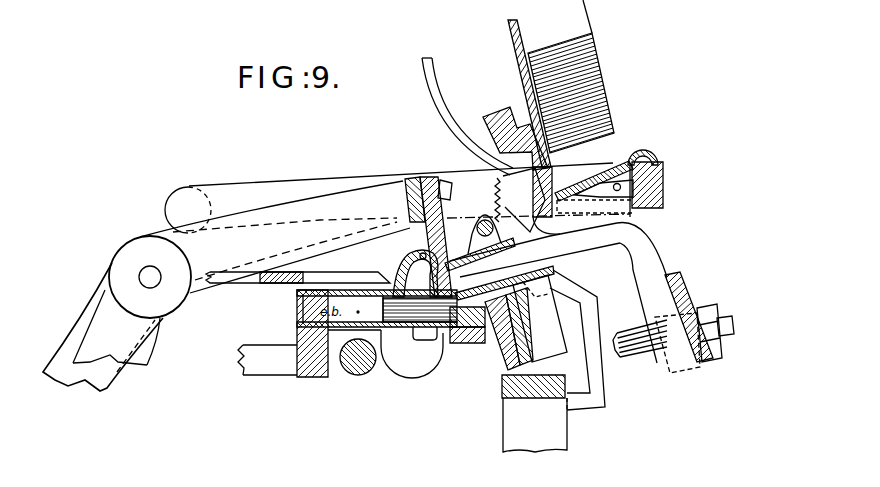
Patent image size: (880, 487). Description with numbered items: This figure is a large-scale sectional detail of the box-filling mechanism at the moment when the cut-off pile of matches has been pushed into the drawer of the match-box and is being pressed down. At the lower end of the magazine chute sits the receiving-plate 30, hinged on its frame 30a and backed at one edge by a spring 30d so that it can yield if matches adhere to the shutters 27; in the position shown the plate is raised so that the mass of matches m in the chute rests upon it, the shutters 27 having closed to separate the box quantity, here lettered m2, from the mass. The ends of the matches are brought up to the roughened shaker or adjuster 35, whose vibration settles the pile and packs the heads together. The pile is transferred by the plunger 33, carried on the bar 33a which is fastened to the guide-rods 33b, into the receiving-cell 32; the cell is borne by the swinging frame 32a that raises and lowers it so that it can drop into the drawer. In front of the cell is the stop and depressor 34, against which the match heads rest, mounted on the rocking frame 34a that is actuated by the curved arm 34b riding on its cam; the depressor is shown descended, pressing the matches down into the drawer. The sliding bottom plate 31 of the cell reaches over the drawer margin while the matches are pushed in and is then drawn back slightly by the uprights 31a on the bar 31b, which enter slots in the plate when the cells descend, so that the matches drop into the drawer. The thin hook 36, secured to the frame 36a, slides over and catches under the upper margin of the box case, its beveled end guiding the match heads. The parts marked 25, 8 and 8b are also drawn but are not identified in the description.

The frame 34a is at (262, 183).
The swinging frame 32a is at (535, 328).
The curved arm 34b is at (152, 338).
The frame 36a is at (348, 282).
The frame 30a is at (388, 173).
The stop and depressor 34 is at (410, 252).
The thin hook 36 is at (391, 280).
The receiving-cell 32 is at (480, 243).
The plunger 33 is at (504, 280).
The sliding plate 31 is at (535, 250).
The uprights 31a is at (537, 285).
The bar 33a is at (668, 274).
The guide-rods 33b is at (637, 331).
The bar 31b is at (502, 386).
The bar 25 is at (525, 53).
The mass of matches m is at (603, 72).
The shaker or adjuster 35 is at (517, 162).
The shutters 27 is at (593, 143).
The receiving-plate 30 is at (645, 149).
The spring 30d is at (580, 192).
The roller 8 is at (361, 377).
The tab 8b is at (429, 341).
The pile of matches m2 is at (420, 307).